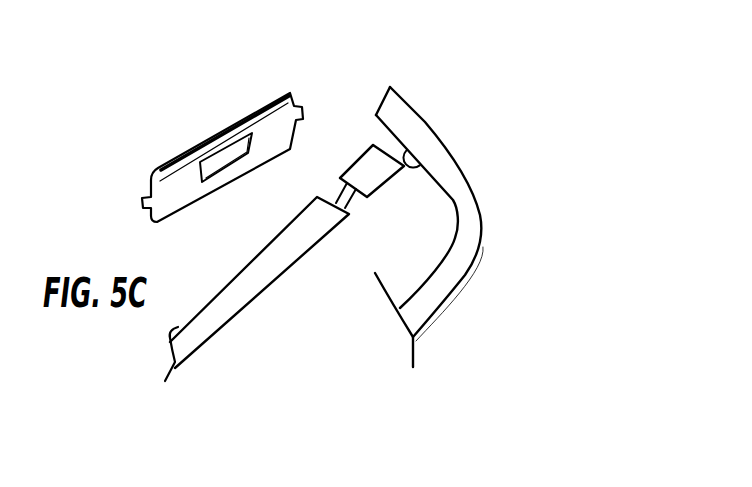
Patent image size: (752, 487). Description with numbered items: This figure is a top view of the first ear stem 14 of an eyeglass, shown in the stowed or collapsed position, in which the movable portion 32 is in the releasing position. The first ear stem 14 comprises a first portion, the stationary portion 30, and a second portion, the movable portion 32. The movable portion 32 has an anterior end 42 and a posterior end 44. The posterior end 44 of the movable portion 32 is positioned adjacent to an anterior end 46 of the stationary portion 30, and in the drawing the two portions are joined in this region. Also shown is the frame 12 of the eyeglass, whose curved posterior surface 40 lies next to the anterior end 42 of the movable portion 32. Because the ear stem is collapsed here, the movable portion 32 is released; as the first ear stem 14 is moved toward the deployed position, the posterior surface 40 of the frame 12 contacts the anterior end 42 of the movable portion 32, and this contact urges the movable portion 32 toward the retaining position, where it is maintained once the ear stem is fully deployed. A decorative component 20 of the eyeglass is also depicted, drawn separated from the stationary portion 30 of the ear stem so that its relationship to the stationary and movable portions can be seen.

The frame 12 is at (483, 215).
The first ear stem 14 is at (208, 364).
The decorative component 20 is at (172, 191).
The stationary portion 30 is at (280, 257).
The movable portion 32 is at (358, 160).
The posterior surface 40 is at (377, 100).
The anterior end 42 is at (381, 150).
The posterior end 44 is at (343, 187).
The anterior end 46 is at (352, 207).